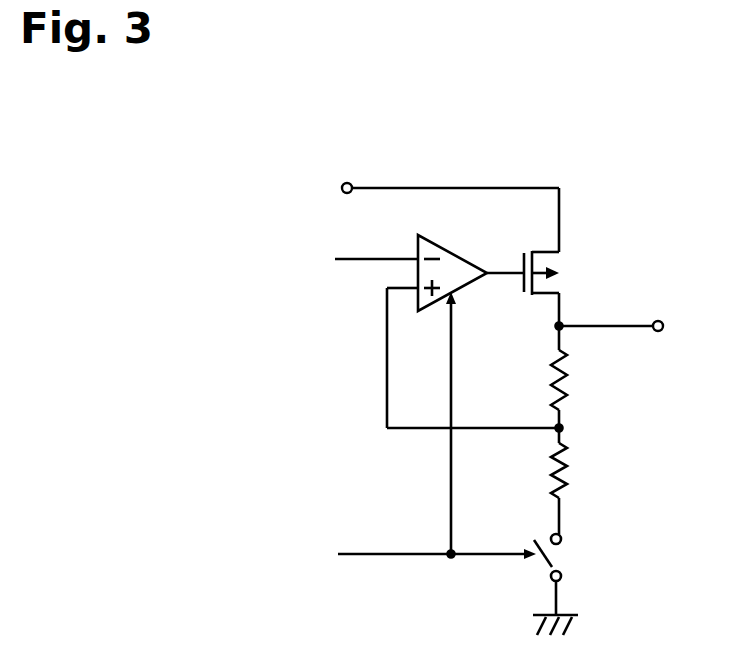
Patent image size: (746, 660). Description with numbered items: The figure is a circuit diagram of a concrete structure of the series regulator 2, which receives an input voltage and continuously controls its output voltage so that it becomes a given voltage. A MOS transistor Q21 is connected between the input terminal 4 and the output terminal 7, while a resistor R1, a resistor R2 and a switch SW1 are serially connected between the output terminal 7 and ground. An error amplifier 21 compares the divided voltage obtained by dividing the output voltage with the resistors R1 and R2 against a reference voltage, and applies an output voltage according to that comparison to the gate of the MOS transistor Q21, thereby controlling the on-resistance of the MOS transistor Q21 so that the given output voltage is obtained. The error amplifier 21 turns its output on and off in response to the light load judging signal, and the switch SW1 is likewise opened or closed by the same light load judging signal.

The series regulator 2 is at (600, 221).
The input terminal 4 is at (347, 182).
The output terminal 7 is at (658, 320).
The error amplifier 21 is at (450, 251).
The MOS transistor Q21 is at (547, 249).
The resistor R1 is at (544, 380).
The resistor R2 is at (544, 470).
The switch SW1 is at (548, 556).